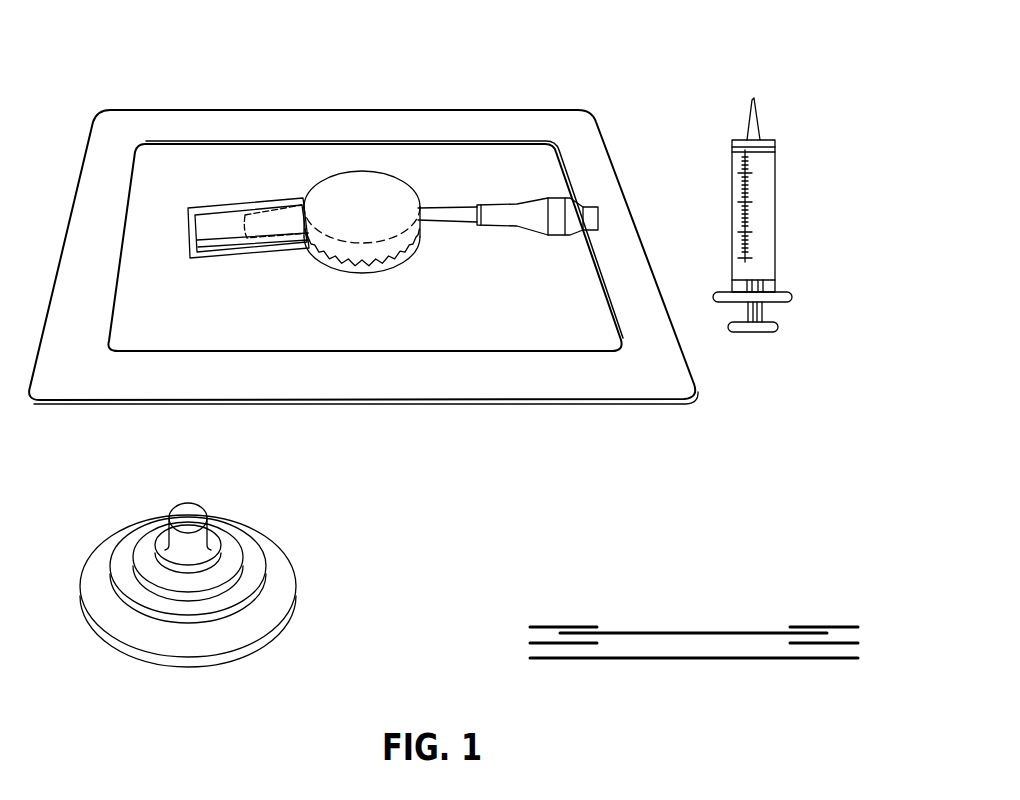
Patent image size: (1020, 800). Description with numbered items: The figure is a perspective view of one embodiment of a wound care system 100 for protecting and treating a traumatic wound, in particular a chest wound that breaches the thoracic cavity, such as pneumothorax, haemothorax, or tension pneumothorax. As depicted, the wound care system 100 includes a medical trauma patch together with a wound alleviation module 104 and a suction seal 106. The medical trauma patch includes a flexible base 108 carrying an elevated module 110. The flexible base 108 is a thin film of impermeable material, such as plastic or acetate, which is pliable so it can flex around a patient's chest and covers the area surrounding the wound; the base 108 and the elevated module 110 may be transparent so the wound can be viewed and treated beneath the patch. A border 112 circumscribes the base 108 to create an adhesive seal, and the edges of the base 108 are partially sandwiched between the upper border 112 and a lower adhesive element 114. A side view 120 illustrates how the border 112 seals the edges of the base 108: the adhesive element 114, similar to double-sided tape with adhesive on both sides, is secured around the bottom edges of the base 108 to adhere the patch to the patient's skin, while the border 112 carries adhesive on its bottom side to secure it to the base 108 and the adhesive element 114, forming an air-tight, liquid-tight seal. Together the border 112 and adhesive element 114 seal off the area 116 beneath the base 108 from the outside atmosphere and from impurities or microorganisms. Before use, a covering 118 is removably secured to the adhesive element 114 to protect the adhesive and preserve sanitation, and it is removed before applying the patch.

The wound care system 100 is at (121, 38).
The wound alleviation module 104 is at (765, 218).
The suction seal 106 is at (280, 575).
The flexible base 108 is at (423, 317).
The elevated module 110 is at (362, 202).
The border 112 is at (600, 372).
The adhesive element 114 is at (530, 643).
The area beneath the base 116 is at (666, 650).
The covering 118 is at (708, 658).
The side view 120 is at (614, 568).